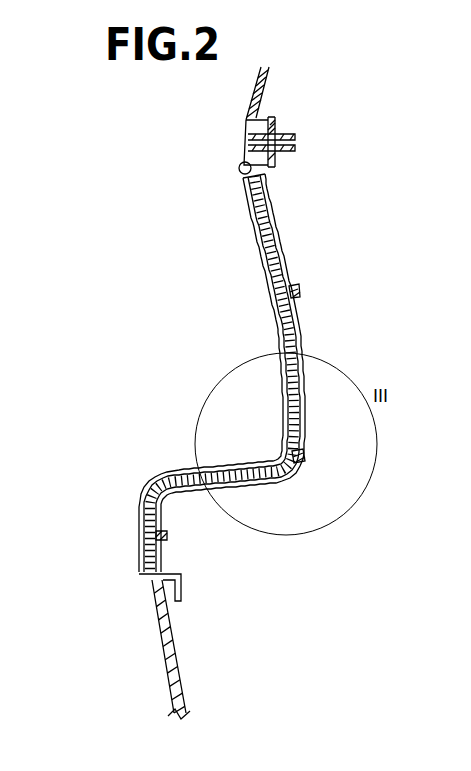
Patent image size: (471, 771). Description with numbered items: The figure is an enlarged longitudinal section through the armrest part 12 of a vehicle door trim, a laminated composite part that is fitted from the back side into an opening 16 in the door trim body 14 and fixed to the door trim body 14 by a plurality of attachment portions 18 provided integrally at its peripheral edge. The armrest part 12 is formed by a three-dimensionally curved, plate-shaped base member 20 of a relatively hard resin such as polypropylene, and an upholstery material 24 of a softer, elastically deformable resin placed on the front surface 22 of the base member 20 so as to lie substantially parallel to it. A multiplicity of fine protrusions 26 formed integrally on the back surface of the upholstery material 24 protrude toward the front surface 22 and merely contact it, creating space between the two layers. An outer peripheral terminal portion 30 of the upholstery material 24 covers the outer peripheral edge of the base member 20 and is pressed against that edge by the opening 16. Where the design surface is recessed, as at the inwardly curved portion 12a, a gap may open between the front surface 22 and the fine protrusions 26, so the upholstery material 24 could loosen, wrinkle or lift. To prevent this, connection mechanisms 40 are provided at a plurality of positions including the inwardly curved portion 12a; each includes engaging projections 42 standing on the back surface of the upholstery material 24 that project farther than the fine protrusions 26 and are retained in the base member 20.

The armrest part 12 is at (113, 246).
The inwardly curved portion 12a is at (228, 400).
The door trim body 14 is at (160, 667).
The opening 16 is at (243, 178).
The attachment portions 18 is at (278, 130).
The base member 20 is at (306, 385).
The front surface 22 is at (266, 485).
The upholstery material 24 is at (200, 466).
The fine protrusions 26 is at (272, 216).
The outer peripheral terminal portion 30 is at (241, 163).
The connection mechanisms 40 is at (318, 286).
The engaging projections 42 is at (297, 292).